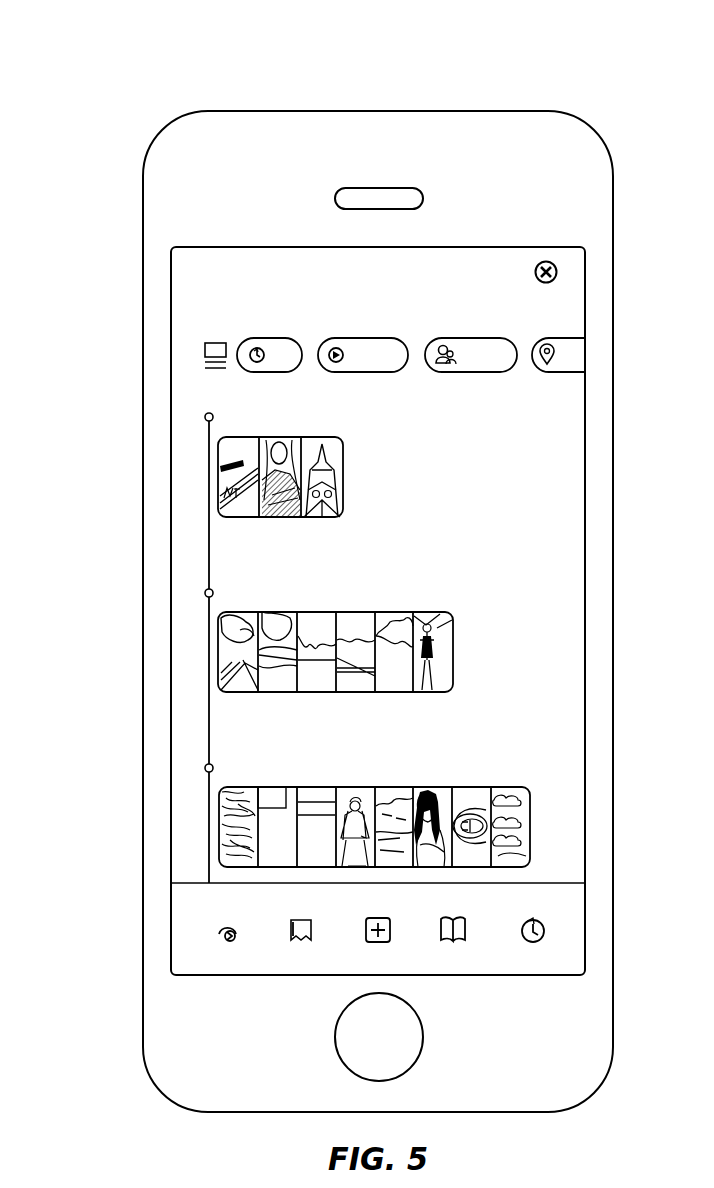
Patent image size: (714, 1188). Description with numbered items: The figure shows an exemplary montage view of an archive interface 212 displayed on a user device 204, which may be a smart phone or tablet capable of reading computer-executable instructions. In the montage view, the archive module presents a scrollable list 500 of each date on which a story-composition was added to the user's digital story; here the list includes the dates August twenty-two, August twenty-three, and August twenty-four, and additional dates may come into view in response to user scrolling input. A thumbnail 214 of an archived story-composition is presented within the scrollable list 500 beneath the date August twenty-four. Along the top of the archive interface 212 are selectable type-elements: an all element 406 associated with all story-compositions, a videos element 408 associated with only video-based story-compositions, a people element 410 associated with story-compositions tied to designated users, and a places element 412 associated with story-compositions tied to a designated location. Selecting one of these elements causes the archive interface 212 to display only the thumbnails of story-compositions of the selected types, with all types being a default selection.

The user device 204 is at (121, 70).
The archive interface 212 is at (378, 611).
The scrollable list 500 is at (209, 549).
The thumbnail 214 is at (238, 518).
The all element 406 is at (272, 338).
The videos element 408 is at (358, 338).
The people element 410 is at (458, 338).
The places element 412 is at (567, 338).